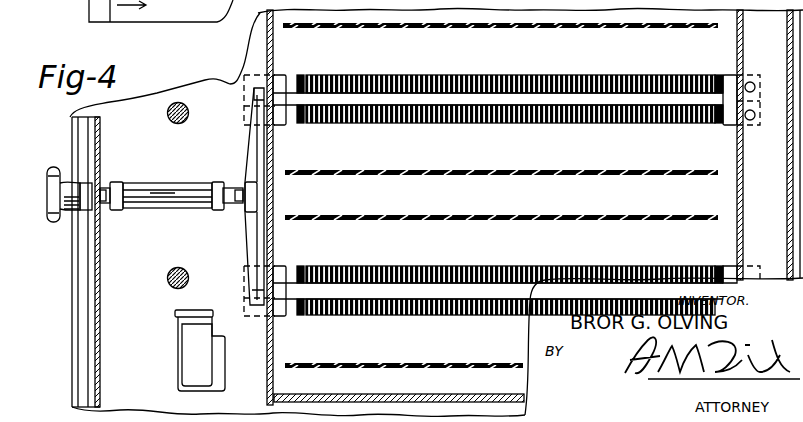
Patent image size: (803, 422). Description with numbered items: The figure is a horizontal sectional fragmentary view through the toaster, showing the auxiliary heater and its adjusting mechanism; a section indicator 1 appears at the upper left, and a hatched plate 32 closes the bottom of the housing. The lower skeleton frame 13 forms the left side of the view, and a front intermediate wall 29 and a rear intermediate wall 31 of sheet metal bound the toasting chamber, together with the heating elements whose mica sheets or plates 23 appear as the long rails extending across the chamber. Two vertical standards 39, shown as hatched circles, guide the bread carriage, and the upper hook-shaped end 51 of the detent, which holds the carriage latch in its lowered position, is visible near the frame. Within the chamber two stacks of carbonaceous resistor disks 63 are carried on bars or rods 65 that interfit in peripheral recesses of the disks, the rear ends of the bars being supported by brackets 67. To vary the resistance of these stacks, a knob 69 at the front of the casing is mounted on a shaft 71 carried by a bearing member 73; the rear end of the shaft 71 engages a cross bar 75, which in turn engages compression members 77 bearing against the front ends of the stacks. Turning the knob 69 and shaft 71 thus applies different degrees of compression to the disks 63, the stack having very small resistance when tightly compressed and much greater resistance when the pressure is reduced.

The section indicator 1 is at (137, 7).
The lower skeleton frame 13 is at (70, 327).
The sheets or plates of electric insulating material 23 is at (491, 28).
The front intermediate wall 29 is at (273, 233).
The rear intermediate wall 31 is at (742, 207).
The bottom plate 32 is at (392, 394).
The vertical standards 39 is at (196, 107).
The upper hook-shaped end of detent 51 is at (176, 312).
The resistor disks 63 is at (656, 124).
The bars or rods 65 is at (606, 100).
The brackets 67 is at (280, 75).
The knob 69 is at (51, 167).
The shaft 71 is at (150, 183).
The bearing member 73 is at (192, 210).
The cross bar 75 is at (257, 153).
The compression members 77 is at (290, 125).